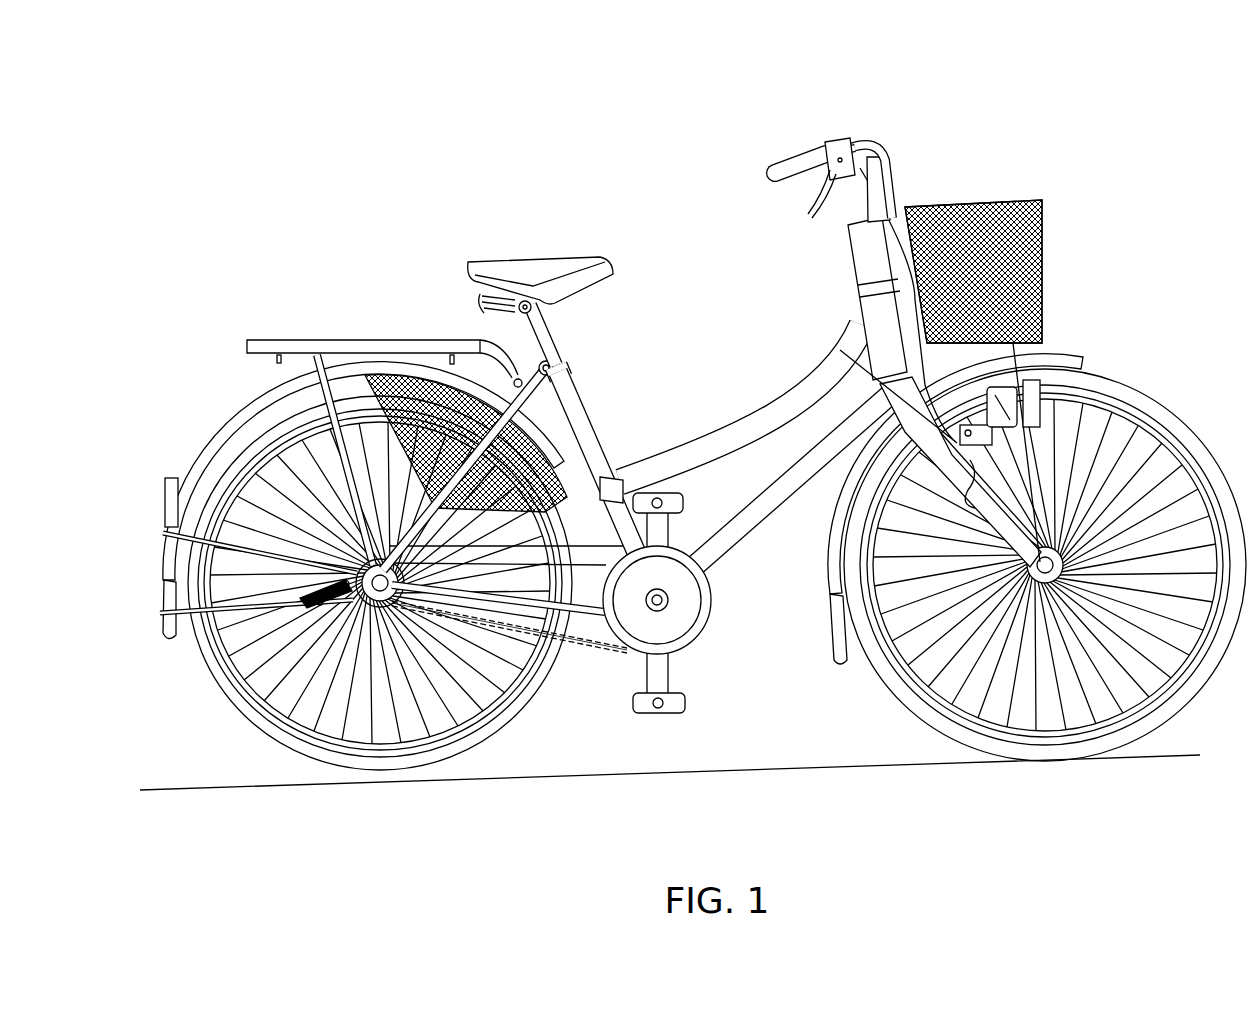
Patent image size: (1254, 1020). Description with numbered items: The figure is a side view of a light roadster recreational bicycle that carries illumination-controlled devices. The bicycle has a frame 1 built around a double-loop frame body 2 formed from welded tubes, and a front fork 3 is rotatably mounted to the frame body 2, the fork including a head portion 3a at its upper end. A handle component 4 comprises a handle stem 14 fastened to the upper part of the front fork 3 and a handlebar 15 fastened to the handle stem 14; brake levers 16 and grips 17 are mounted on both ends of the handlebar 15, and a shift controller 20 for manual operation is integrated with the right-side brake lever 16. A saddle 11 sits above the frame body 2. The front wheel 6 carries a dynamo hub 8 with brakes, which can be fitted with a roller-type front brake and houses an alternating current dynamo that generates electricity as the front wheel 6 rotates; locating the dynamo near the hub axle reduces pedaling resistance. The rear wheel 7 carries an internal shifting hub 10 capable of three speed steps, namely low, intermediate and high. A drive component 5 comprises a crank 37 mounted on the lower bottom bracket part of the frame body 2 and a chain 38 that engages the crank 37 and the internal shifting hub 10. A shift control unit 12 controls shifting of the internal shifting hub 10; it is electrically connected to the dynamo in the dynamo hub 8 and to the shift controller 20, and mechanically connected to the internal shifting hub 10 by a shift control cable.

The frame 1 is at (645, 414).
The frame body 2 is at (762, 430).
The front fork 3 is at (1017, 457).
The head tube 3a is at (860, 380).
The handle component 4 is at (843, 188).
The drive component 5 is at (690, 528).
The front wheel 6 is at (1045, 548).
The rear wheel 7 is at (525, 723).
The dynamo hub 8 is at (1183, 473).
The internal shifting hub 10 is at (305, 577).
The saddle 11 is at (540, 262).
The shift control unit 12 is at (1020, 398).
The handle stem 14 is at (855, 252).
The handlebar 15 is at (870, 148).
The brake lever 16 is at (808, 212).
The grip 17 is at (793, 163).
The shift controller 20 is at (826, 146).
The crank 37 is at (660, 650).
The chain 38 is at (597, 650).